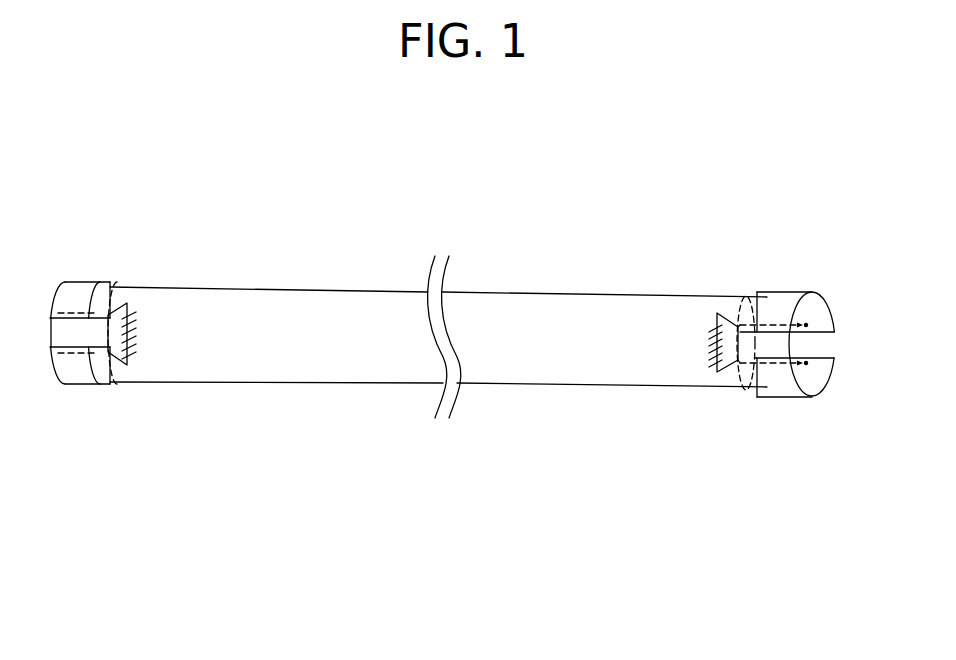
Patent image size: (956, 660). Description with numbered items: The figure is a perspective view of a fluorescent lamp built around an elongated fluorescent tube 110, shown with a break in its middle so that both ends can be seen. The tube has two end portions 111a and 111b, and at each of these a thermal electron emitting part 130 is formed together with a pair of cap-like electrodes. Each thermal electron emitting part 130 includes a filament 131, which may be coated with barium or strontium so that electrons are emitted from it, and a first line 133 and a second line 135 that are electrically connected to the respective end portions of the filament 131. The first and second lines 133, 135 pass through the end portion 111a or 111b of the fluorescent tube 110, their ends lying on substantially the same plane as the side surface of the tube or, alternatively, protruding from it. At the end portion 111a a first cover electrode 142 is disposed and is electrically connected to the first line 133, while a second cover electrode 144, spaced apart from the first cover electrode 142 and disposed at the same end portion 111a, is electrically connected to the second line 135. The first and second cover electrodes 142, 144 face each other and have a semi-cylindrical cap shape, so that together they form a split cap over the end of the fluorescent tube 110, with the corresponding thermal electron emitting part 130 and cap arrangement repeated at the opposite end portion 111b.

The fluorescent tube 110 is at (550, 286).
The end portion of the fluorescent tube 111a is at (767, 297).
The end portion of the fluorescent tube 111b is at (116, 284).
The thermal electron emitting part 130 is at (715, 421).
The filament 131 is at (712, 373).
The first line 133 is at (737, 362).
The second line 135 is at (747, 376).
The first cover electrode 142 is at (818, 310).
The second cover electrode 144 is at (817, 381).